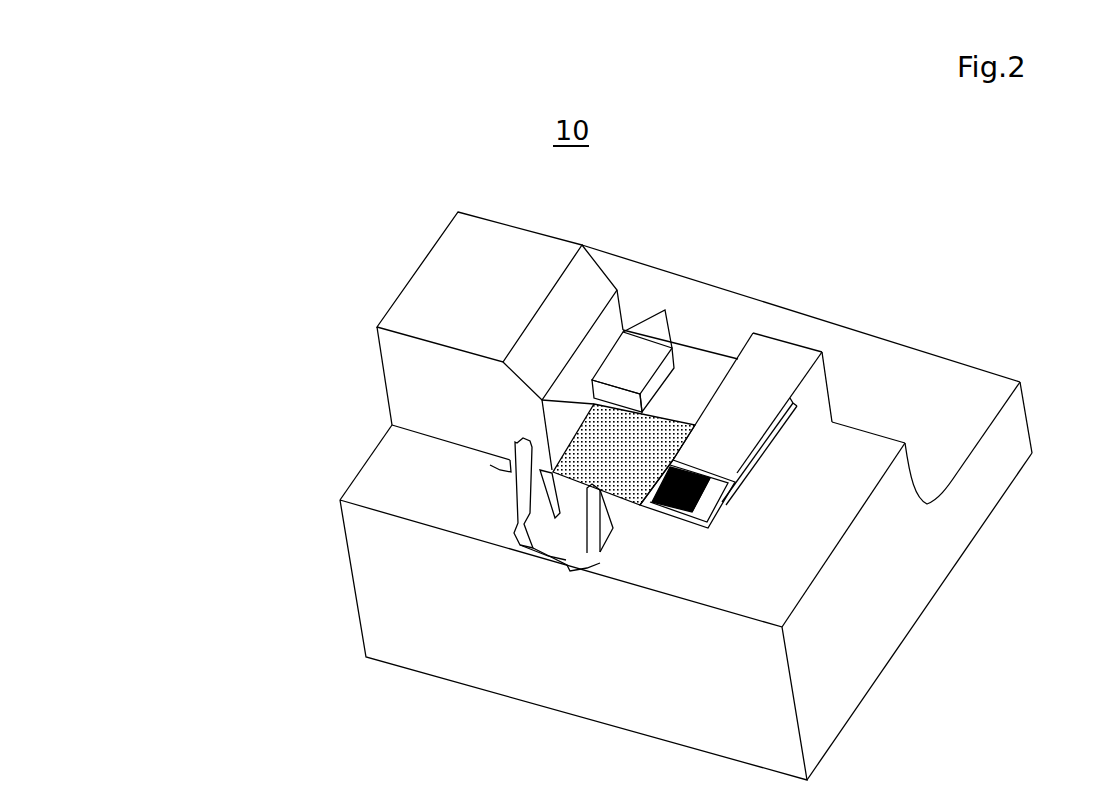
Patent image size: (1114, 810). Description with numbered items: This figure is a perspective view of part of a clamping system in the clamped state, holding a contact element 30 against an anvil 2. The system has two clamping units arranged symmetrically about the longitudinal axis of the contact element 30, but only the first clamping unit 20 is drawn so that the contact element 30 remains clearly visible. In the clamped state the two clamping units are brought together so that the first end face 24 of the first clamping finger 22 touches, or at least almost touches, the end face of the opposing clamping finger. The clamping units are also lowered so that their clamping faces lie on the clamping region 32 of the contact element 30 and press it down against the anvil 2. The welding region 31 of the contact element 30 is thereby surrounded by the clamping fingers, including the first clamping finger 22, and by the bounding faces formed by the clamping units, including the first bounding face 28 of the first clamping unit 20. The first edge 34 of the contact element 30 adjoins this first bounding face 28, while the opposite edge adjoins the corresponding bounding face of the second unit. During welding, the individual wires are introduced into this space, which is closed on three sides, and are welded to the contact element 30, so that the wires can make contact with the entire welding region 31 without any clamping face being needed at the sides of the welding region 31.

The anvil 2 is at (725, 502).
The first clamping unit 20 is at (497, 298).
The first clamping finger 22 is at (638, 362).
The first end face 24 is at (658, 380).
The first bounding face 28 is at (567, 401).
The contact element 30 is at (575, 545).
The welding region 31 is at (637, 450).
The clamping region 32 is at (688, 385).
The first edge 34 is at (657, 482).